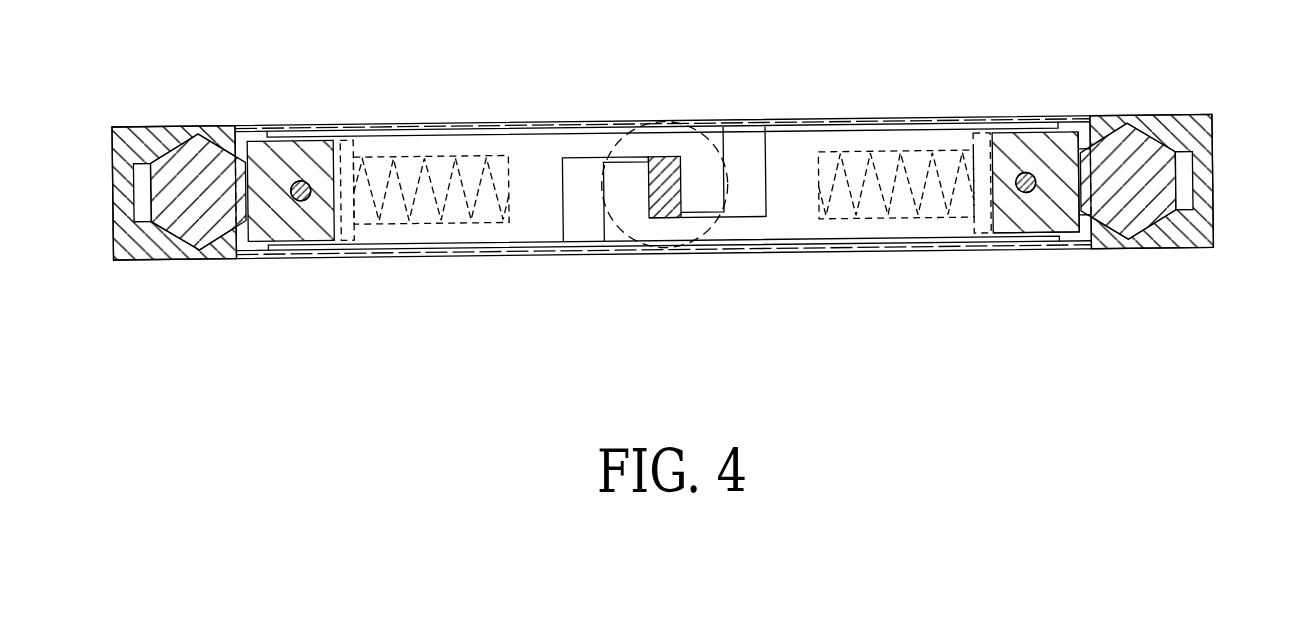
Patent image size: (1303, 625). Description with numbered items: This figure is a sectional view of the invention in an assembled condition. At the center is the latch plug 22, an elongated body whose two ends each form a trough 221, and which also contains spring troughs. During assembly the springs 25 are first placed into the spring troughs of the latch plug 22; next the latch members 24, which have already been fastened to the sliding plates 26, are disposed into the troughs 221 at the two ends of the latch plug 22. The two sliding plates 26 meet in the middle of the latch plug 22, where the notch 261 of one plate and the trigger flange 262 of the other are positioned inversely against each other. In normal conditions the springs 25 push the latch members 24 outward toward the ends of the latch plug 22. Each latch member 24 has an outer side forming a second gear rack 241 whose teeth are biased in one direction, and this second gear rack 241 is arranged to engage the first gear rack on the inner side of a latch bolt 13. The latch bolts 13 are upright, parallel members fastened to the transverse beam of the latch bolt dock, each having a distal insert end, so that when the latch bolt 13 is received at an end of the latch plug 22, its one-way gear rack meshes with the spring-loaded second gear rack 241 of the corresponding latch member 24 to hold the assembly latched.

The latch bolt 13 is at (187, 171).
The latch plug 22 is at (1190, 139).
The trough 221 is at (985, 165).
The latch member 24 is at (1065, 224).
The second gear rack 241 is at (1083, 234).
The spring 25 is at (403, 181).
The sliding plate 26 is at (788, 155).
The notch 261 is at (577, 218).
The trigger flange 262 is at (695, 185).